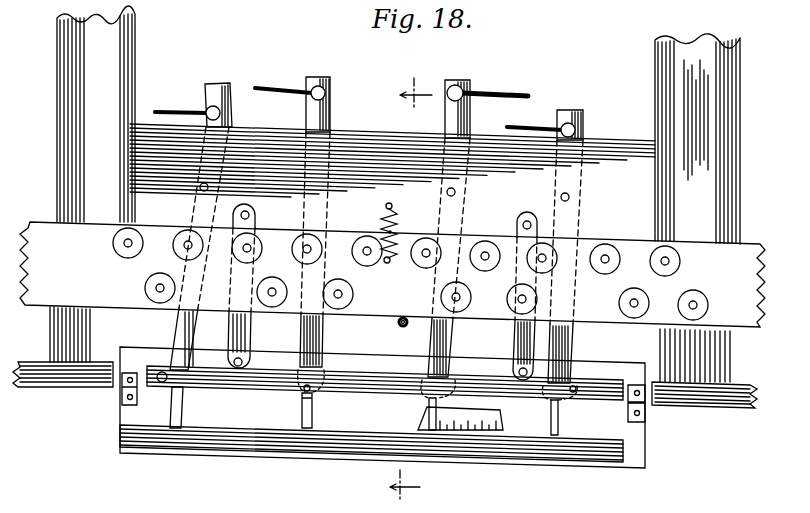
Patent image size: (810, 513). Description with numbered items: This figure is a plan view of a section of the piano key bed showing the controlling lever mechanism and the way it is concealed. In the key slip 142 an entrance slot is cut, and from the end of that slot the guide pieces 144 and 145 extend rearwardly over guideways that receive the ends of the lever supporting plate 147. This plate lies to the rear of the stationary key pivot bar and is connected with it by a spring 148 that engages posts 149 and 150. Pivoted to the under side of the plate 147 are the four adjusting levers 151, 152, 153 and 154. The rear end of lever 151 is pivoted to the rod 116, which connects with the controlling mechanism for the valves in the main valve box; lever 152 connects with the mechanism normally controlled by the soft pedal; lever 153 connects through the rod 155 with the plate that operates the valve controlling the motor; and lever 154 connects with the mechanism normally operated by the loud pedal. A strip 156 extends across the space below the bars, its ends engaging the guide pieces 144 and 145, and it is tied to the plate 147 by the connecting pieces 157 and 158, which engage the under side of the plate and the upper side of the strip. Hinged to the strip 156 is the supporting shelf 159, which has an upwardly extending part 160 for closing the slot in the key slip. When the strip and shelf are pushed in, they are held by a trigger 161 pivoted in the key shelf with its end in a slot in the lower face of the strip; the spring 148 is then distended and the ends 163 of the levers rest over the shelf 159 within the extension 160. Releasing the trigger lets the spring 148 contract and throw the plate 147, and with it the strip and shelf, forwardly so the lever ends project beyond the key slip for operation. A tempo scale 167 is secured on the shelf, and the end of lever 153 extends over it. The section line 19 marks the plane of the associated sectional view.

The section line 19— 19 is at (415, 288).
The rod 116 is at (166, 111).
The key slip 142 is at (703, 402).
The guide piece 144 is at (57, 147).
The guide piece 145 is at (741, 150).
The lever supporting plate 147 is at (354, 140).
The spring 148 is at (382, 233).
The post 149 is at (388, 263).
The post 150 is at (394, 202).
The adjusting lever 151 is at (180, 328).
The adjusting lever 152 is at (322, 331).
The adjusting lever 153 is at (448, 331).
The adjusting lever 154 is at (571, 343).
The rod 155 is at (497, 92).
The strip 156 is at (403, 326).
The connecting piece 157 is at (253, 331).
The connecting piece 158 is at (516, 347).
The supporting shelf 159 is at (632, 456).
The upwardly extending part 160 is at (333, 441).
The trigger 161 is at (400, 319).
The lever end 163 is at (180, 430).
The tempo scale 167 is at (500, 428).